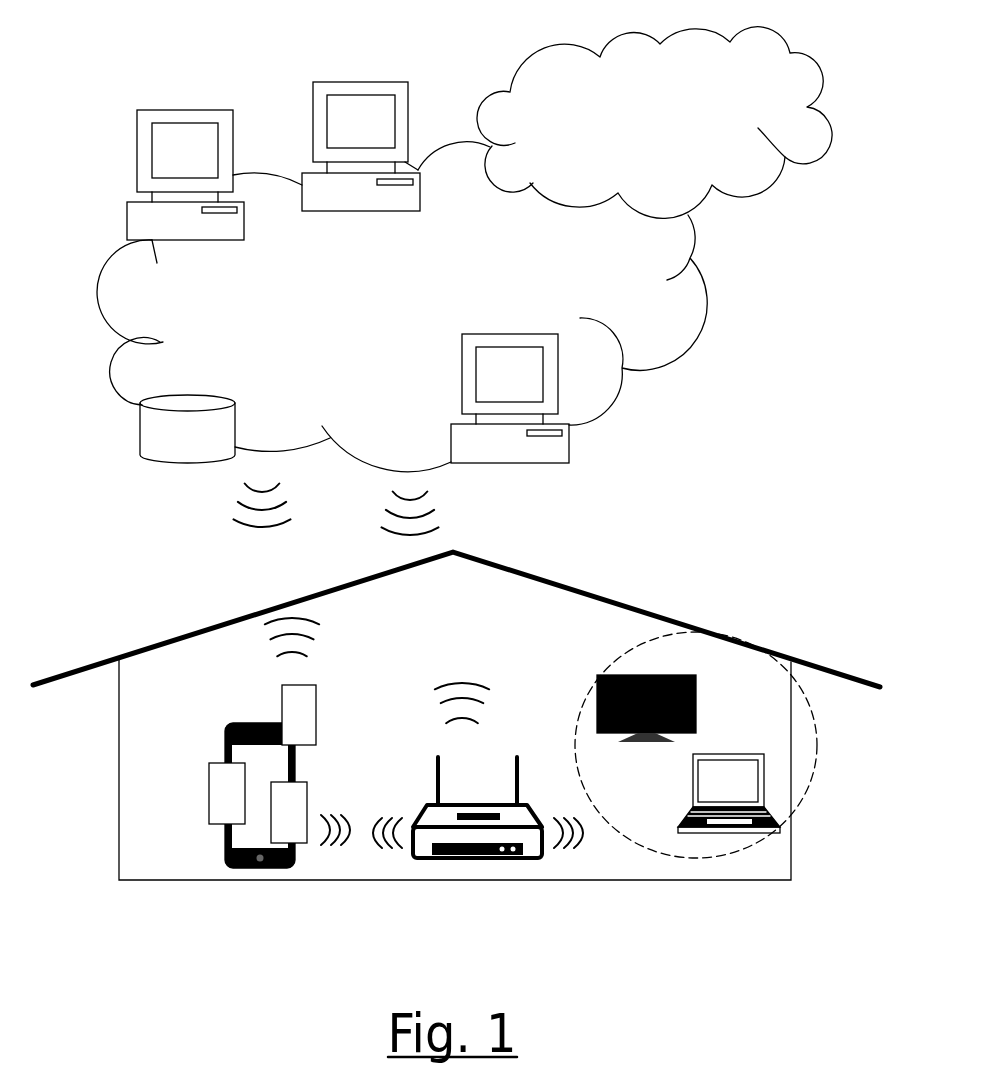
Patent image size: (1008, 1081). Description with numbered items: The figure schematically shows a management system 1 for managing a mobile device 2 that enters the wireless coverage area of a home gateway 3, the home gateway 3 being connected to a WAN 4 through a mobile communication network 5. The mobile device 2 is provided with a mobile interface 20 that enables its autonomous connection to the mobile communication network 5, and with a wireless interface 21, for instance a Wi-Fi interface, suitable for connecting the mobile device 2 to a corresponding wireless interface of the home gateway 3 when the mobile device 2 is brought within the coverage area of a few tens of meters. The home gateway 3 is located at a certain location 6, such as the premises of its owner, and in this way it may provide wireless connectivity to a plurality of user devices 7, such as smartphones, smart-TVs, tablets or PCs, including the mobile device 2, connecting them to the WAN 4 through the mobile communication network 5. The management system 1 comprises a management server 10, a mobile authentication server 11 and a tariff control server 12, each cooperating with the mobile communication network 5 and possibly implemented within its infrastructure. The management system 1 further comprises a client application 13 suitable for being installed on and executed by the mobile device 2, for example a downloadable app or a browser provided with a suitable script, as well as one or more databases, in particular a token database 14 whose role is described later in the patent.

The management system 1 is at (600, 490).
The mobile device 2 is at (260, 870).
The home gateway 3 is at (478, 858).
The WAN 4 is at (831, 117).
The mobile communication network 5 is at (707, 307).
The location 6 is at (119, 767).
The user devices 7 is at (815, 745).
The management server 10 is at (508, 334).
The mobile authentication server 11 is at (362, 82).
The tariff control server 12 is at (185, 109).
The client application 13 is at (209, 793).
The token database 14 is at (187, 463).
The mobile interface 20 is at (318, 713).
The wireless interface 21 is at (307, 813).